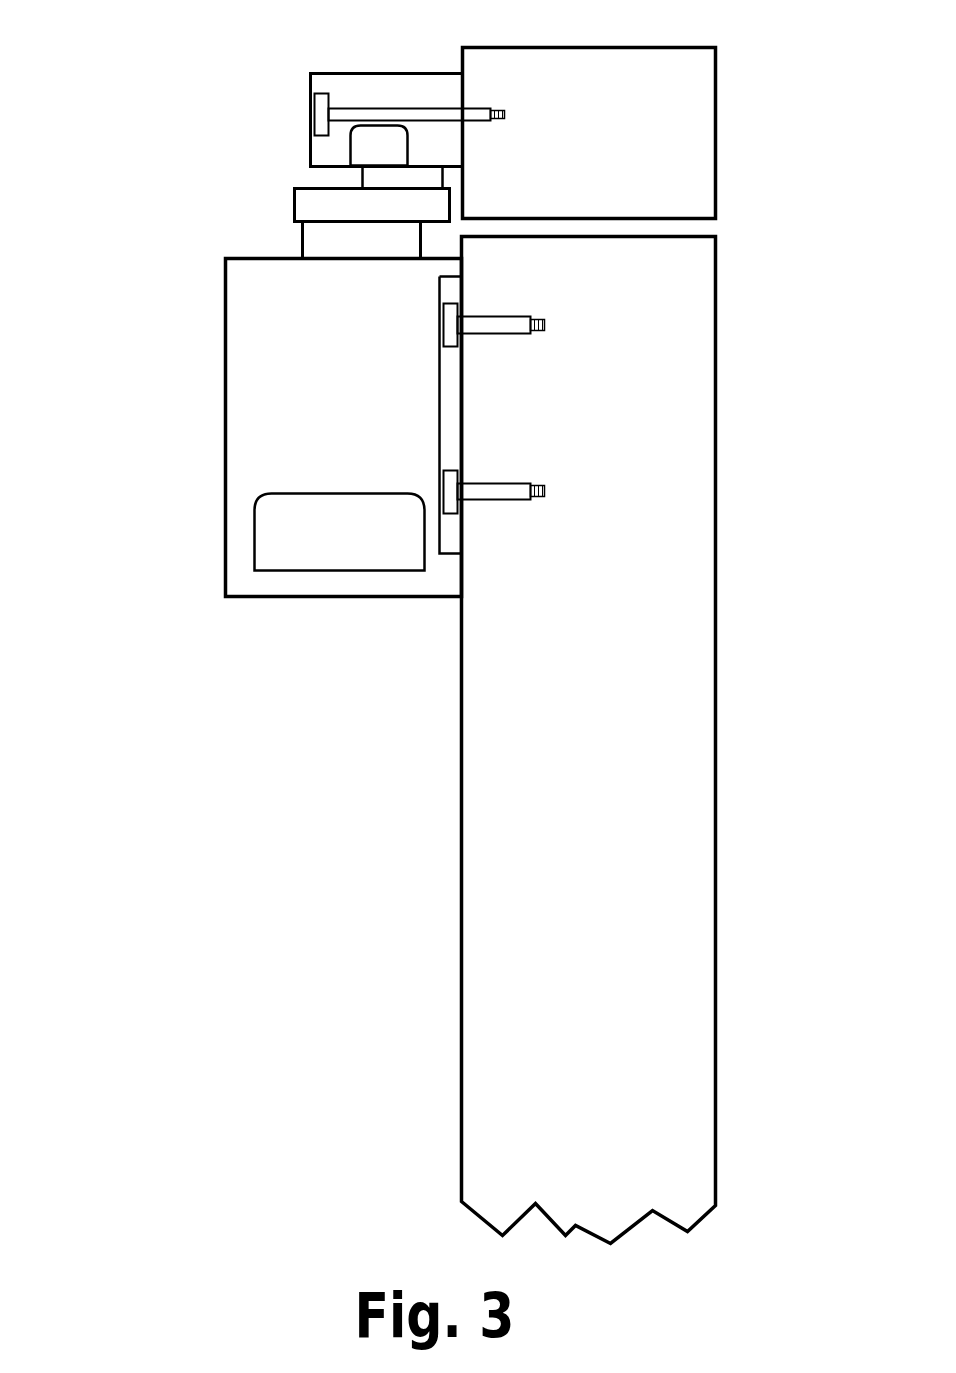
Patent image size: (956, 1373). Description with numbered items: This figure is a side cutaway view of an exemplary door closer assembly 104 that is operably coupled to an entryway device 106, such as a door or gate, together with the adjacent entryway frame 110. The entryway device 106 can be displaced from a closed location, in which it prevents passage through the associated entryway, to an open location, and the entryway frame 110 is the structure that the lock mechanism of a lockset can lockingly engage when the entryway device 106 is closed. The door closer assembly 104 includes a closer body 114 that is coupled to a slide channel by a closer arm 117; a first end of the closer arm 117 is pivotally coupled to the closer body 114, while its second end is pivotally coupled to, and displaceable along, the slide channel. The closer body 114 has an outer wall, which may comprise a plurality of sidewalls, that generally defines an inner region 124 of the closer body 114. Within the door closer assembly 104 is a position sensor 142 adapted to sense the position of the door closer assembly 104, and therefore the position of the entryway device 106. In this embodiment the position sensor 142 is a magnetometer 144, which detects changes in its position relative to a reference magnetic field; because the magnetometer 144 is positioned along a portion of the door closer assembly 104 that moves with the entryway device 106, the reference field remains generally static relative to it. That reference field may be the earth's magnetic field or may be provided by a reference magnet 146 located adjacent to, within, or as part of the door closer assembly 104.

The door closer assembly 104 is at (188, 110).
The entryway device 106 is at (643, 797).
The entryway frame 110 is at (683, 167).
The closer body 114 is at (222, 528).
The closer arm 117 is at (308, 203).
The inner region 124 is at (355, 422).
The position sensor 142 is at (340, 584).
The magnetometer 144 is at (295, 550).
The reference magnet 146 is at (383, 135).